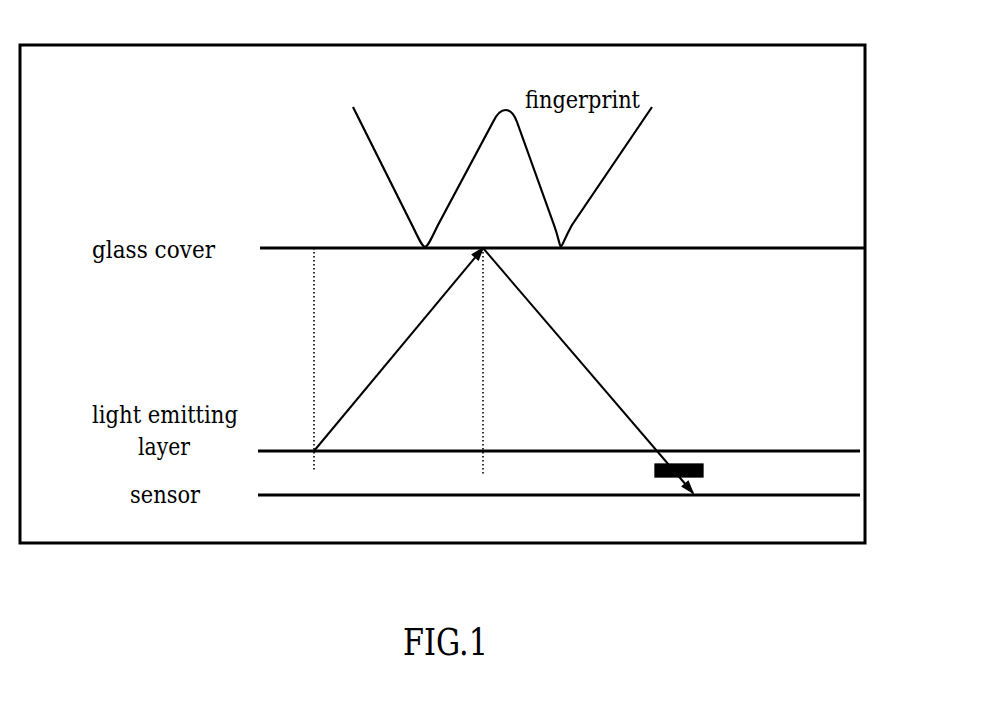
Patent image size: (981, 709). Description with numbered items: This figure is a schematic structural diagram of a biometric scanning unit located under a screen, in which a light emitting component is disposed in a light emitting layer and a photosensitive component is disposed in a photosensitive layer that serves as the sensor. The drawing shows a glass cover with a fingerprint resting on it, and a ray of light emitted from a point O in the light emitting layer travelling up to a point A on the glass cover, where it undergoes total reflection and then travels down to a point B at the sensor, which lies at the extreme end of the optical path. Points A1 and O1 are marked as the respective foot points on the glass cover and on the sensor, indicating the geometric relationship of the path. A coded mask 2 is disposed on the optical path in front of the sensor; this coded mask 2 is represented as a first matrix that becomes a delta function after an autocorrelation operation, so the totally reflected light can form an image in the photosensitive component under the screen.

The coded mask 2 is at (703, 467).
The light emission point O is at (385, 349).
The reflection point on glass cover A is at (481, 345).
The point A' (projection of A on glass cover normal) A1 is at (320, 343).
The sensing point on sensor B is at (591, 393).
The point O' (projection of O on sensor) O1 is at (306, 530).